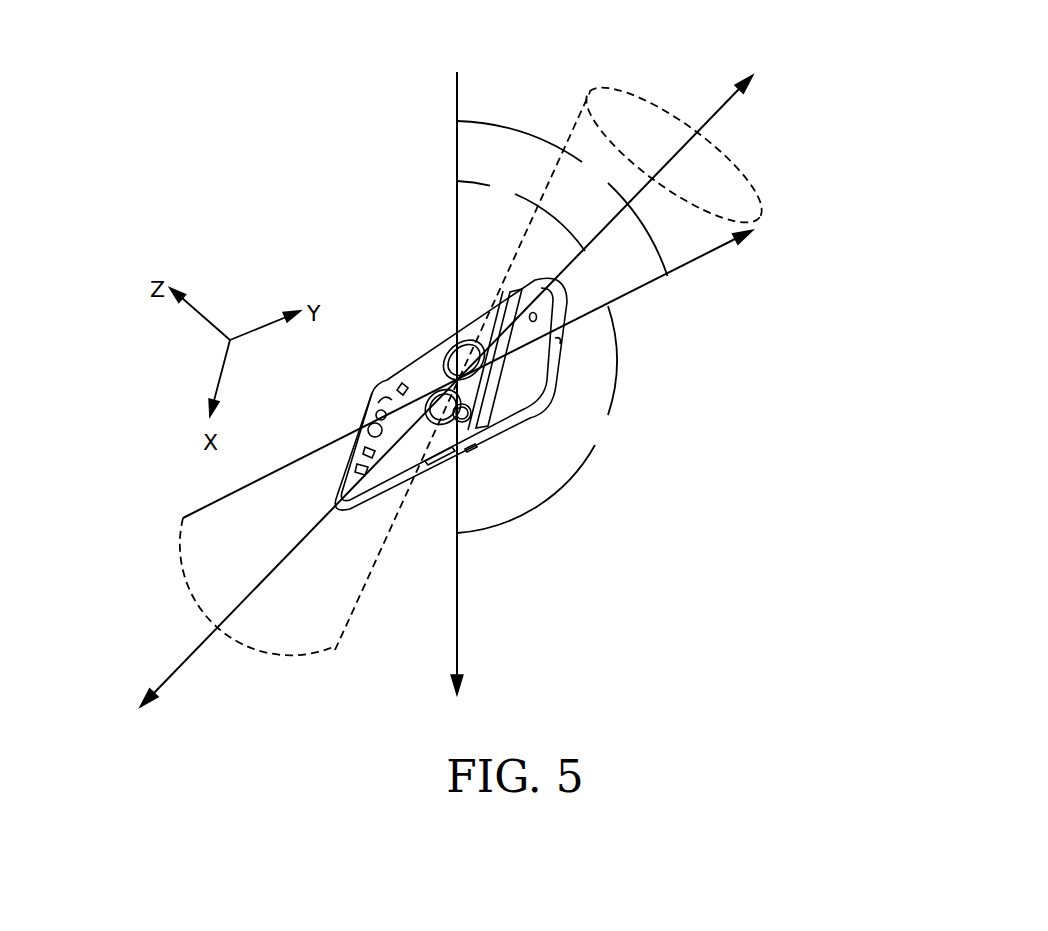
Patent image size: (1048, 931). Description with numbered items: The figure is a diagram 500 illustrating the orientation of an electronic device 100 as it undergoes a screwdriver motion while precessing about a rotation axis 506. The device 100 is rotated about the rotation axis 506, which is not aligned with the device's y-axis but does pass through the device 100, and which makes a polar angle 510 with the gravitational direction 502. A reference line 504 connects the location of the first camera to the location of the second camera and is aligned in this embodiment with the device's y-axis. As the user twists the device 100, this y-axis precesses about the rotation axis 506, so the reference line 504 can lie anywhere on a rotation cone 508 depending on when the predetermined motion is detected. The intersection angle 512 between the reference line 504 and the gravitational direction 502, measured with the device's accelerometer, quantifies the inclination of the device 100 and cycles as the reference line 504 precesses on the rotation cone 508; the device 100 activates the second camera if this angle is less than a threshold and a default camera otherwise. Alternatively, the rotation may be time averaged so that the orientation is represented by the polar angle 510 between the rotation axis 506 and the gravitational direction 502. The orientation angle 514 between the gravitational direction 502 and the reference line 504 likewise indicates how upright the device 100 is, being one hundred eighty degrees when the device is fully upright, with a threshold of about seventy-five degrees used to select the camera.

The electronic device 100 is at (409, 362).
The diagram 500 is at (963, 118).
The gravitational direction 502 is at (458, 581).
The reference line 504 is at (699, 264).
The rotation axis 506 is at (736, 95).
The rotation cone 508 is at (758, 198).
The polar angle 510 is at (475, 182).
The intersection angle 512 is at (541, 138).
The orientation angle 514 is at (580, 468).